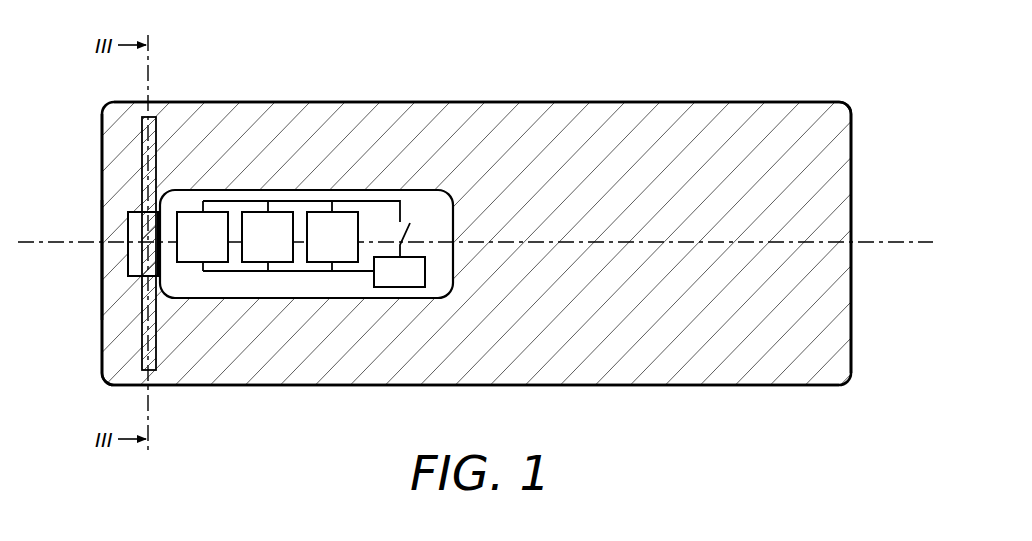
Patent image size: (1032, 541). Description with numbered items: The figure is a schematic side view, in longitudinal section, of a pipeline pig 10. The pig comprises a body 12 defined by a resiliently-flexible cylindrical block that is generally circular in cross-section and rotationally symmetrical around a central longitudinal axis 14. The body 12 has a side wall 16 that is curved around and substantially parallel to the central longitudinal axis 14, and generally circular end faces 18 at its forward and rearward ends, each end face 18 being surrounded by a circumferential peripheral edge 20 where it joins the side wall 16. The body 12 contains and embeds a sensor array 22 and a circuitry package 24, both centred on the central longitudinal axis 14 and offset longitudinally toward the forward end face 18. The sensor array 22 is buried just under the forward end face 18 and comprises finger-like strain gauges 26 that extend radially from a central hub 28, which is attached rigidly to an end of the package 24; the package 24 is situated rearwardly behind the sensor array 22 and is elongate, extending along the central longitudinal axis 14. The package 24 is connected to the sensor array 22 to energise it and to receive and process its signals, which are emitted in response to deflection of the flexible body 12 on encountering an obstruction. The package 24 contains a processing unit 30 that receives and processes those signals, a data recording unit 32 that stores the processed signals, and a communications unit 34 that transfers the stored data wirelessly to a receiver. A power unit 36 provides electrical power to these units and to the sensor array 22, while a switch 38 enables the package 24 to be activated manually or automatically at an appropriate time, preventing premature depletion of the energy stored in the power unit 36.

The pipeline pig 10 is at (722, 54).
The body 12 is at (531, 102).
The central longitudinal axis 14 is at (905, 241).
The side wall 16 is at (725, 386).
The end faces 18 is at (101, 181).
The circumferential peripheral edge 20 is at (850, 103).
The sensor array 22 is at (90, 300).
The circuitry package 24 is at (333, 312).
The strain gauges 26 is at (142, 130).
The central hub 28 is at (127, 222).
The processing unit 30 is at (190, 253).
The data recording unit 32 is at (255, 253).
The communications unit 34 is at (319, 253).
The power unit 36 is at (387, 282).
The switch 38 is at (445, 216).